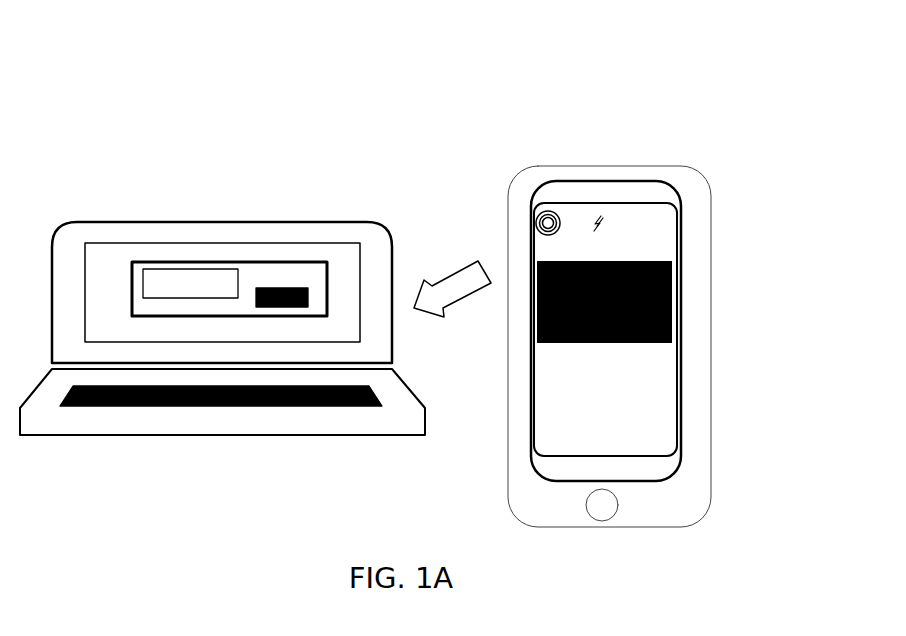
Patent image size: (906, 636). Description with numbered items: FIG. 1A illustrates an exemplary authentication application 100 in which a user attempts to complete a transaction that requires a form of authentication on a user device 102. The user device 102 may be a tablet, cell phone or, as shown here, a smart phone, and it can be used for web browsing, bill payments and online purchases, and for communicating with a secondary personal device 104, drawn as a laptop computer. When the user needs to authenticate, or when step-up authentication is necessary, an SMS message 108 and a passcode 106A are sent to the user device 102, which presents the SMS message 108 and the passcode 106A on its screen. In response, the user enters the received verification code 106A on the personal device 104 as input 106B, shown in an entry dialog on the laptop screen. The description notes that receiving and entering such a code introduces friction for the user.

The system environment 100 is at (722, 63).
The user device 102 is at (662, 167).
The personal device 104 is at (298, 222).
The passcode 106A is at (555, 412).
The input 106B is at (182, 262).
The SMS message 108 is at (538, 266).